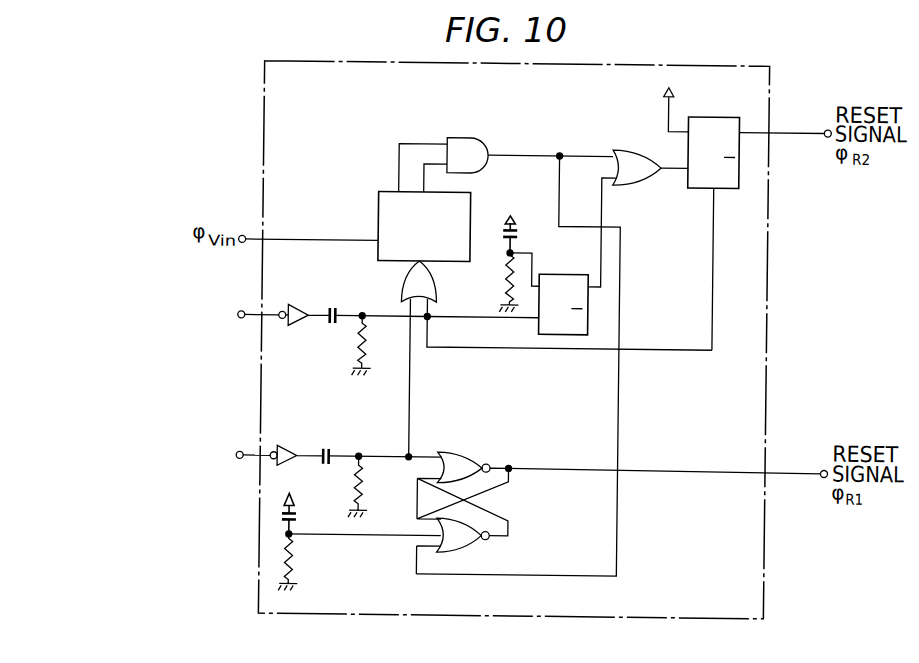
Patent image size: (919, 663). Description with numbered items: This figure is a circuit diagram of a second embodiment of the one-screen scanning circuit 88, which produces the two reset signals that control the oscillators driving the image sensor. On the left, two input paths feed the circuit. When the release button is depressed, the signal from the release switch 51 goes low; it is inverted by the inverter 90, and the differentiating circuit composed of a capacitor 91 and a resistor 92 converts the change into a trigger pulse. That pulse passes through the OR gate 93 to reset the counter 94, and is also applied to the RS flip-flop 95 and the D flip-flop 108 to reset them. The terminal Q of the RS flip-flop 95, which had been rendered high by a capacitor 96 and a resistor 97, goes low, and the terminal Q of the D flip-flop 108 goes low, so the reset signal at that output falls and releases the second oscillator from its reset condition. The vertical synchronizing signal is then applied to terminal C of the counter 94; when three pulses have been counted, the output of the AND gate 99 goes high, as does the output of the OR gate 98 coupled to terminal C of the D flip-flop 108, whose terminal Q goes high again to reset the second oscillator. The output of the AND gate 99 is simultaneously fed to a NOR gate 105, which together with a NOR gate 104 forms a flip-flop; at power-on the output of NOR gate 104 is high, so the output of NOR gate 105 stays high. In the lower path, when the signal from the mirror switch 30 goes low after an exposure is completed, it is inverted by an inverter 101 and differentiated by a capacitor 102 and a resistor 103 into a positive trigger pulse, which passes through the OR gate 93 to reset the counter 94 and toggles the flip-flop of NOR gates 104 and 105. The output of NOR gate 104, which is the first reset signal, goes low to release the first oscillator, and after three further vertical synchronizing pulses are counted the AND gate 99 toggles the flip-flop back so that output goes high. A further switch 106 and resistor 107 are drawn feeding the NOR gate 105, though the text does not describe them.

The one-screen scanning circuit 88 is at (765, 556).
The release switch 51 is at (241, 318).
The mirror switch 30 is at (241, 458).
The inverter 90 is at (296, 306).
The capacitor 91 is at (331, 308).
The resistor 92 is at (366, 340).
The OR gate 93 is at (436, 292).
The counter 94 is at (377, 200).
The RS flip-flop 95 is at (556, 274).
The capacitor 96 is at (513, 228).
The resistor 97 is at (505, 278).
The OR gate 98 is at (627, 149).
The AND gate 99 is at (458, 138).
The inverter 101 is at (283, 447).
The capacitor 102 is at (326, 449).
The resistor 103 is at (364, 480).
The NOR gate 104 is at (460, 452).
The NOR gate 105 is at (478, 550).
The switch 106 is at (284, 520).
The resistor 107 is at (297, 548).
The D flip-flop 108 is at (712, 115).